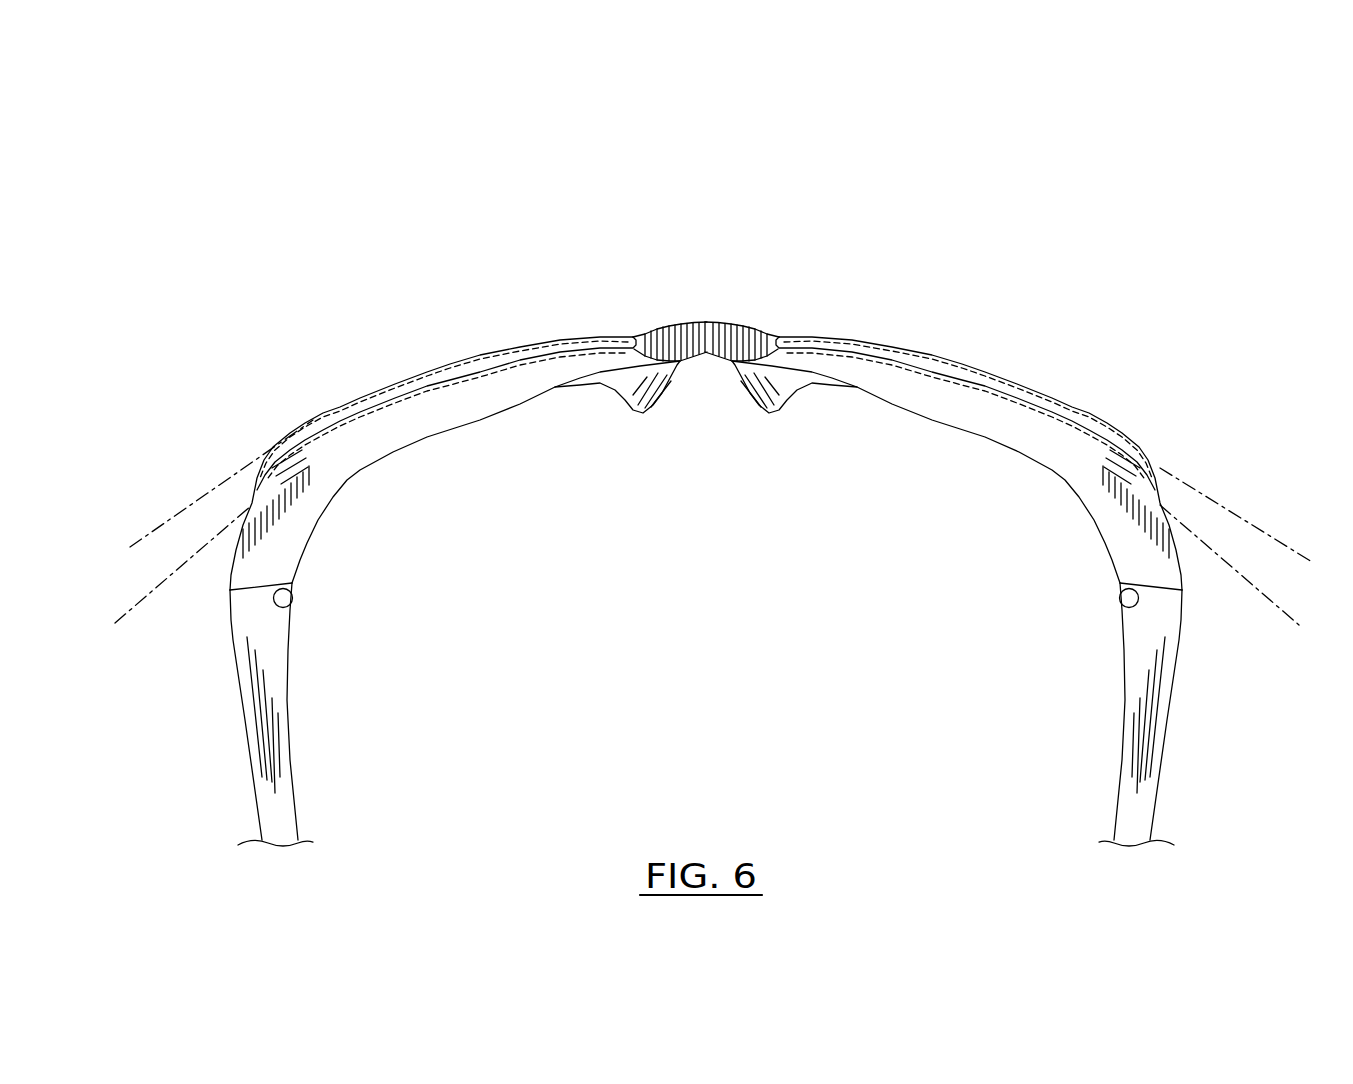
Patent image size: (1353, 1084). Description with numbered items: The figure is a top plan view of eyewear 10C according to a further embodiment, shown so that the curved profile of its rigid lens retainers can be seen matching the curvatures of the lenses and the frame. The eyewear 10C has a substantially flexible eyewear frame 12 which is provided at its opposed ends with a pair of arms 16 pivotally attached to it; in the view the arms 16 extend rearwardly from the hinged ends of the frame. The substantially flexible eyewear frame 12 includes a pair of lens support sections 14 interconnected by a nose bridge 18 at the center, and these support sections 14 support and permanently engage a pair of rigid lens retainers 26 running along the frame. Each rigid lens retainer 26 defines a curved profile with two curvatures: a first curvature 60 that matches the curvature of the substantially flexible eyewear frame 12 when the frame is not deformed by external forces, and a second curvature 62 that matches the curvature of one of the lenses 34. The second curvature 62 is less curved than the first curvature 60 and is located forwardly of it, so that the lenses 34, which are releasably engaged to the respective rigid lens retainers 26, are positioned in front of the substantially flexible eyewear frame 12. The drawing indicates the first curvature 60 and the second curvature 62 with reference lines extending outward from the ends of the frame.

The eyewear 10C is at (680, 184).
The substantially flexible eyewear frame 12 is at (890, 393).
The lens support sections 14 is at (447, 423).
The arms 16 is at (282, 765).
The nose bridge 18 is at (698, 322).
The rigid lens retainers 26 is at (427, 375).
The lenses 34 is at (480, 352).
The first curvature 60 is at (138, 604).
The second curvature 62 is at (202, 500).